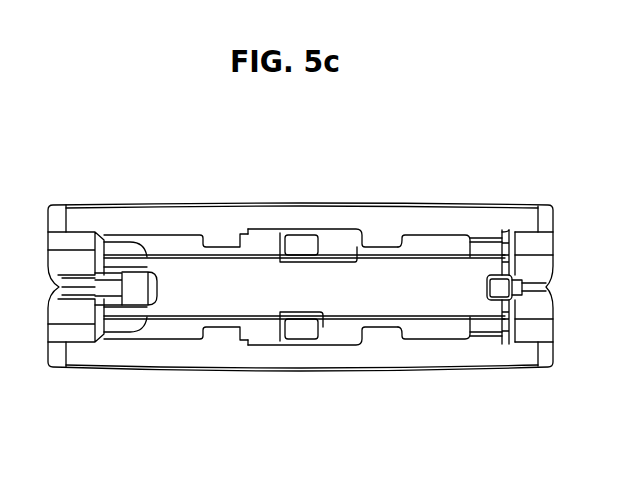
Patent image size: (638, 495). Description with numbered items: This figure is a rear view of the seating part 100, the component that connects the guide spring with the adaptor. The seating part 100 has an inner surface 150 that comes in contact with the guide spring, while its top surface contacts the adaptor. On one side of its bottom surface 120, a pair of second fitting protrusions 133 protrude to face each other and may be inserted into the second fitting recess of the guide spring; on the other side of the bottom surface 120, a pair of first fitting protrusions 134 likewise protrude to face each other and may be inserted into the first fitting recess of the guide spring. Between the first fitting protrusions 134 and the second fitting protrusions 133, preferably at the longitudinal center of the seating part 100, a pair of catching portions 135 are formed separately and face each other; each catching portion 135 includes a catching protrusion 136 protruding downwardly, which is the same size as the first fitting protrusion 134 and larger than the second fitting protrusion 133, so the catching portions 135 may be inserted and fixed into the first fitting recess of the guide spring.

The seating part 100 is at (505, 203).
The bottom surface 120 is at (166, 213).
The second fitting protrusions 133 is at (216, 232).
The first fitting protrusions 134 is at (377, 247).
The catching portions 135 is at (328, 247).
The catching protrusion 136 is at (300, 245).
The inner surface 150 is at (452, 248).